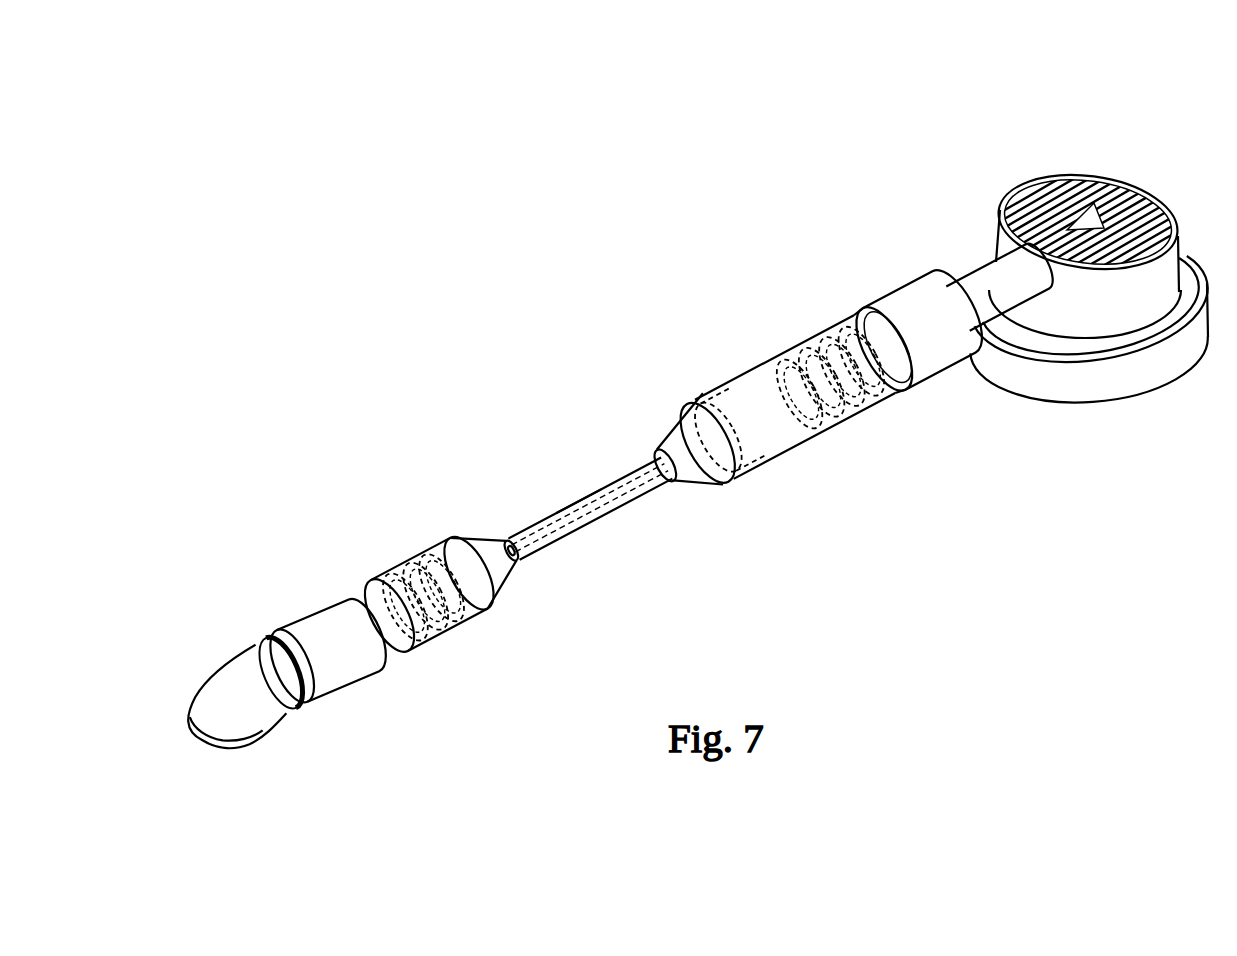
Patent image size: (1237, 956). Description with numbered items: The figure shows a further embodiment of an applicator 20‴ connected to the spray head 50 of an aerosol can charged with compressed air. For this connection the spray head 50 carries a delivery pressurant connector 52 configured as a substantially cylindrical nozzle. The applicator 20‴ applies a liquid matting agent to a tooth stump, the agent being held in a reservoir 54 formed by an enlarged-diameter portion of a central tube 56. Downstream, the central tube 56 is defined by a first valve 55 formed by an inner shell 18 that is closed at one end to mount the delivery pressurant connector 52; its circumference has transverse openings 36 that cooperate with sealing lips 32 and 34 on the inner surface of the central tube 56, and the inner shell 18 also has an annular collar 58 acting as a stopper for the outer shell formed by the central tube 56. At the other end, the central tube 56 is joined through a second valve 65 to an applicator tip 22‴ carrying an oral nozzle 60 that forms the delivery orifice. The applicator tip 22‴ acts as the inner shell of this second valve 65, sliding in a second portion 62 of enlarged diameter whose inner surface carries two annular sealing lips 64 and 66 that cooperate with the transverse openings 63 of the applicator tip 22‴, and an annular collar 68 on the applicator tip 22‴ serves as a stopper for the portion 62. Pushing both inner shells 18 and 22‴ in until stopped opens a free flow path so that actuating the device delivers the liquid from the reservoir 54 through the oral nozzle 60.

The inner shell 18 is at (874, 314).
The applicator 20 is at (558, 503).
The applicator tip 22 is at (387, 633).
The sealing lip 32 is at (843, 415).
The sealing lip 34 is at (873, 385).
The transverse openings 36 is at (847, 385).
The spray head 50 is at (1012, 182).
The delivery pressurant connector 52 is at (976, 286).
The reservoir 54 is at (725, 414).
The first valve 55 is at (762, 340).
The central tube 56 is at (595, 538).
The annular collar 58 is at (926, 302).
The oral nozzle 60 is at (240, 745).
The second portion of enlarged diameter 62 is at (380, 573).
The transverse openings 63 is at (417, 562).
The annular sealing lip 64 is at (443, 640).
The second valve 65 is at (538, 605).
The annular sealing lip 66 is at (477, 623).
The annular collar 68 is at (310, 619).